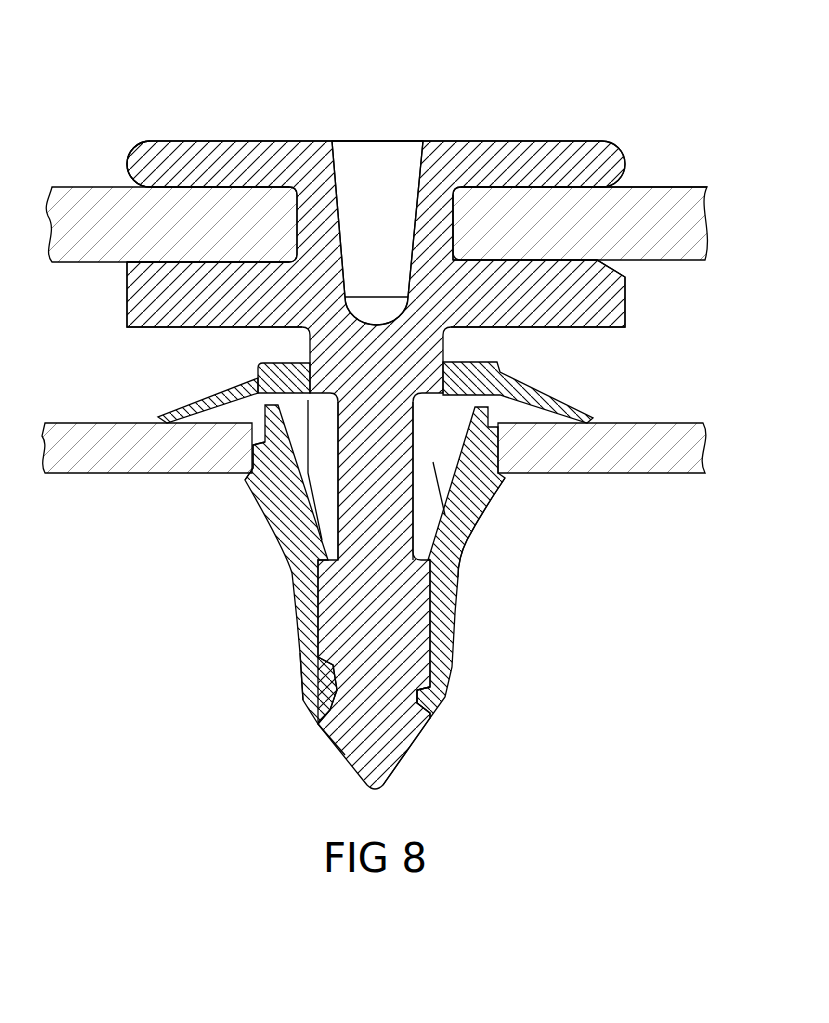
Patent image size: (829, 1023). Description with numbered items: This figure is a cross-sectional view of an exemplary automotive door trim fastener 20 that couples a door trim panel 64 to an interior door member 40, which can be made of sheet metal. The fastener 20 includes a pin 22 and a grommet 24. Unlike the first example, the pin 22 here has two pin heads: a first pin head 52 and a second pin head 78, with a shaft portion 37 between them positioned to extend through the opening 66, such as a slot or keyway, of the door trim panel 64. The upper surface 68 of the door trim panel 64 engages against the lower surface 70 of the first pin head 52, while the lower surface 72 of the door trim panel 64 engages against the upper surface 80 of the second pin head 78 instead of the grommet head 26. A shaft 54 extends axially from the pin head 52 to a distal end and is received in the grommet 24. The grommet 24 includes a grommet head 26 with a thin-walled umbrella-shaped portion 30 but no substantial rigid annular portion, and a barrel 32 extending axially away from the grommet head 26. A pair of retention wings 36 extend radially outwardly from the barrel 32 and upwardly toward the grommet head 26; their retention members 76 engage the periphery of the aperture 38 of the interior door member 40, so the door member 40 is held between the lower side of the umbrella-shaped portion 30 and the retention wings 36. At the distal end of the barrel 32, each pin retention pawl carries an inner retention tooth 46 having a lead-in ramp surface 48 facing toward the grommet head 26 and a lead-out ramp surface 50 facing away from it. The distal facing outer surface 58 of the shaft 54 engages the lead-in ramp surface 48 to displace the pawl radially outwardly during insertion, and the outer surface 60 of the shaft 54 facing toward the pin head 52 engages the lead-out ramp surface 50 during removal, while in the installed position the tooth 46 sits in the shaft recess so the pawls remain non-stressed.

The automotive door trim fastener 20 is at (529, 90).
The pin 22 is at (626, 145).
The grommet 24 is at (563, 397).
The grommet head 26 is at (265, 362).
The umbrella-shaped portion 30 is at (200, 398).
The barrel 32 is at (303, 582).
The retention wings 36 is at (492, 487).
The shaft portion 37 is at (320, 220).
The aperture 38 is at (467, 527).
The interior door member 40 is at (633, 460).
The inner retention tooth 46 is at (433, 694).
The lead-in ramp surface 48 is at (322, 662).
The lead-out ramp surface 50 is at (328, 732).
The pin head 52 is at (141, 164).
The shaft 54 is at (393, 607).
The distal facing outer surface 58 is at (415, 745).
The outer surface 60 is at (305, 694).
The door trim panel 64 is at (683, 230).
The opening 66 is at (447, 223).
The upper surface 68 is at (653, 184).
The lower surface 70 is at (203, 193).
The lower surface 72 is at (657, 266).
The retention members 76 is at (252, 458).
The second pin head 78 is at (127, 302).
The upper surface 80 is at (197, 260).